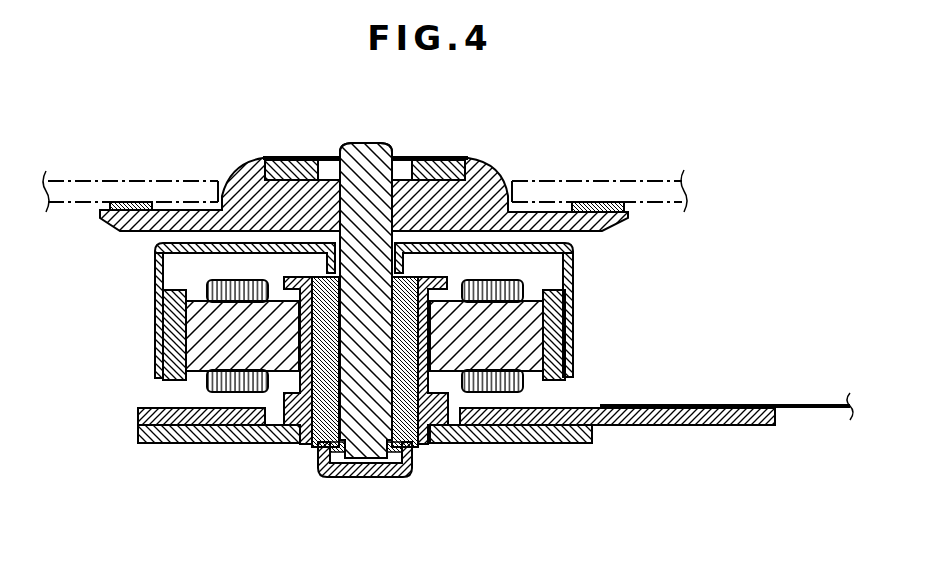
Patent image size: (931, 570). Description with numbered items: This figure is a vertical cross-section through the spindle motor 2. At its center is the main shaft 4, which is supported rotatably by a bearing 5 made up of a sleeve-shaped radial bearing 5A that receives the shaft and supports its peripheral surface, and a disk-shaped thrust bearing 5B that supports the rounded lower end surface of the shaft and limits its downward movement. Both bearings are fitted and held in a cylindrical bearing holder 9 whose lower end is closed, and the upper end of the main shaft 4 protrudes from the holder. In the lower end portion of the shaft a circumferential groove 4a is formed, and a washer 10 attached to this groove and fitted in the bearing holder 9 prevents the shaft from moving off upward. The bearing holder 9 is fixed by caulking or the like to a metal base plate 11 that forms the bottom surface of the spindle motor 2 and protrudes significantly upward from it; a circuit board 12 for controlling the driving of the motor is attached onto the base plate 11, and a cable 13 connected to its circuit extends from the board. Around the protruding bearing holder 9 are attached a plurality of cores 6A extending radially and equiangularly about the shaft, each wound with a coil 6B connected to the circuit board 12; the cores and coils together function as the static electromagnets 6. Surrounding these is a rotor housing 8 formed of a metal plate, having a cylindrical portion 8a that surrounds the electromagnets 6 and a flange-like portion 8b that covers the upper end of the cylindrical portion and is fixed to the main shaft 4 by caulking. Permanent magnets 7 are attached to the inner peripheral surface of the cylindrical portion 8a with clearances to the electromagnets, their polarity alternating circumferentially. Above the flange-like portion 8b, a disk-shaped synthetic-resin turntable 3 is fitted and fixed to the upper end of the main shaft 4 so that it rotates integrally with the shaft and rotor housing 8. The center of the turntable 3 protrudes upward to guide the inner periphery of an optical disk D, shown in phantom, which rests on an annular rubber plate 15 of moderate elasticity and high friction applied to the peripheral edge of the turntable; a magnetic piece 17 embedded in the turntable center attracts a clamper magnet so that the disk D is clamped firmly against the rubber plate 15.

The spindle motor 2 is at (363, 375).
The turntable 3 is at (364, 164).
The main shaft 4 is at (402, 305).
The groove 4a is at (400, 448).
The bearing 5 is at (327, 399).
The radial bearing 5A is at (291, 446).
The thrust bearing 5B is at (320, 466).
The electromagnets 6 is at (423, 327).
The cores 6A is at (536, 325).
The coil 6B is at (492, 279).
The permanent magnets 7 is at (176, 380).
The rotor housing 8 is at (319, 310).
The cylindrical portion 8a is at (157, 340).
The flange-like portion 8b is at (198, 255).
The bearing holder 9 is at (364, 478).
The washer 10 is at (413, 447).
The base plate 11 is at (567, 444).
The circuit board 12 is at (707, 426).
The cable 13 is at (805, 404).
The annular rubber plate 15 is at (624, 206).
The magnetic piece 17 is at (249, 160).
The optical disk D is at (118, 180).